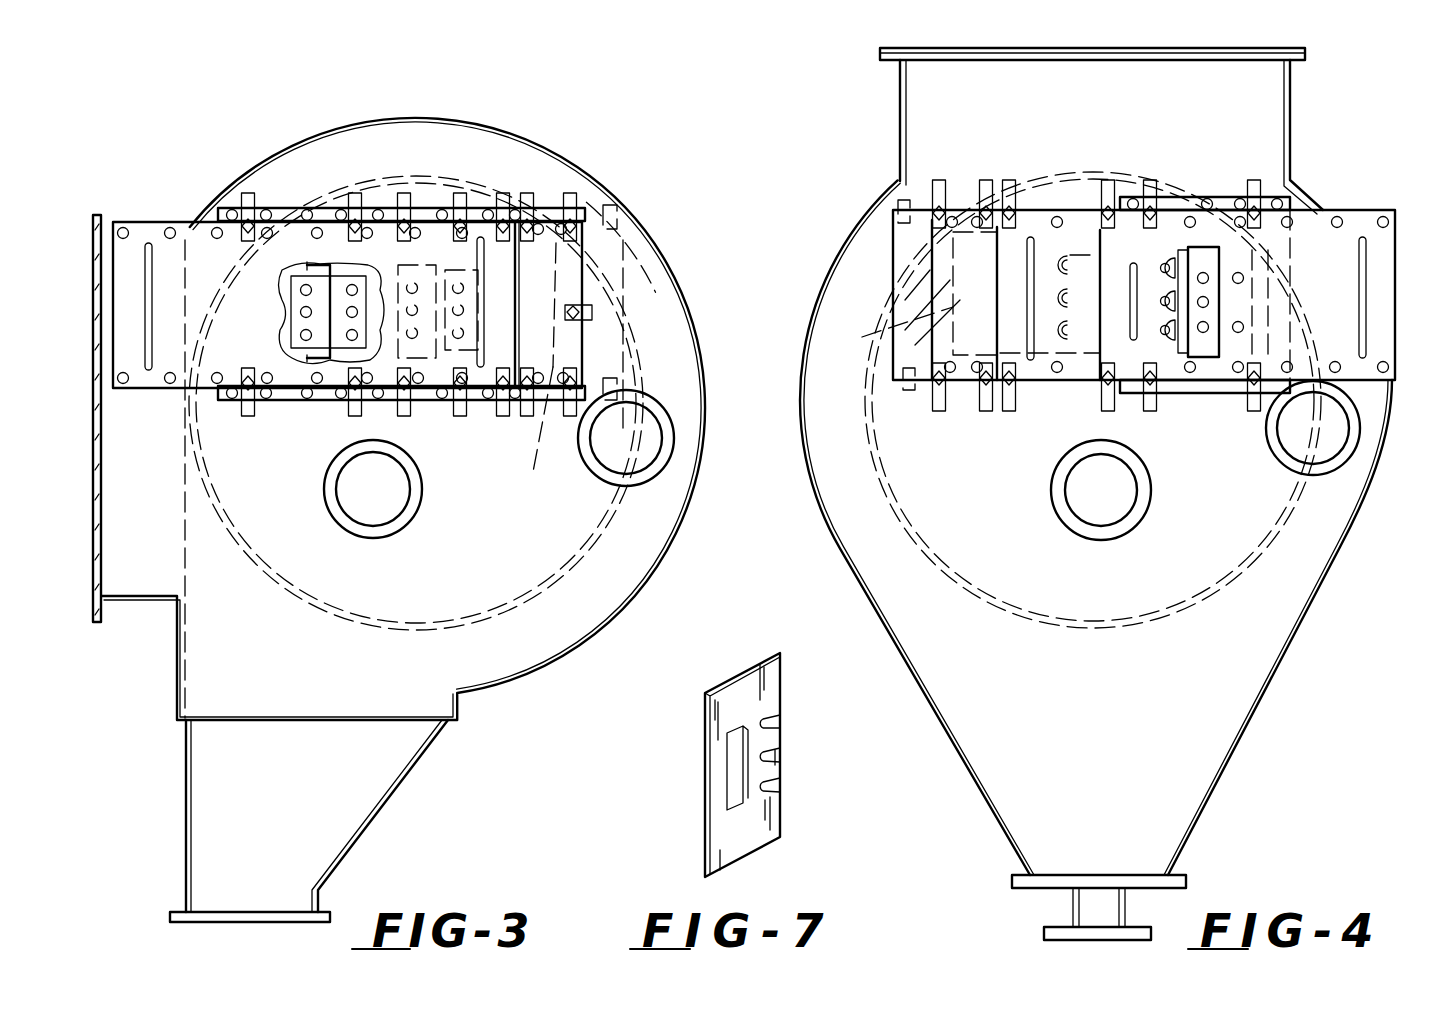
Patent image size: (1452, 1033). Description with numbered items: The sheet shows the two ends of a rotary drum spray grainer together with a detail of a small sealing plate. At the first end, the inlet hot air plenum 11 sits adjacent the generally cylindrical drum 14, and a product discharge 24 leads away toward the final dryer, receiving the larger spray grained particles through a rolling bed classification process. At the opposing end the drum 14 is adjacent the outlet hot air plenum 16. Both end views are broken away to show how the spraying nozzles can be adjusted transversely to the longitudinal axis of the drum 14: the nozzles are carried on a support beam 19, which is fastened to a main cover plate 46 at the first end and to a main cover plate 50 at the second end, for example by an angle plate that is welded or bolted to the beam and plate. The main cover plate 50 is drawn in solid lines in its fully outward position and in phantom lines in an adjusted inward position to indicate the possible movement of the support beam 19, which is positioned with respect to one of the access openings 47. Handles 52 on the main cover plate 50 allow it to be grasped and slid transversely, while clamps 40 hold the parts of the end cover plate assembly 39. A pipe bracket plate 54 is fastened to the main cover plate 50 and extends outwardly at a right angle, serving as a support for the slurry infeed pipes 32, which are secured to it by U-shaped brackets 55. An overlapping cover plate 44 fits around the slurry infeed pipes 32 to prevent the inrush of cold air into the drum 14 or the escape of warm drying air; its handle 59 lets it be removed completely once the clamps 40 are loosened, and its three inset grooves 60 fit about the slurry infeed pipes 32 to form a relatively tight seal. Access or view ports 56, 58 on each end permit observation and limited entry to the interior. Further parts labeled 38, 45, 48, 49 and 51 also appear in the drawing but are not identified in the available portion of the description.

In FIG. 3, the inlet hot air plenum 11 is at (84, 215).
In FIG. 3, the drum 14 is at (572, 578).
In FIG. 4, the drum 14 is at (1212, 604).
In FIG. 4, the outlet hot air plenum 16 is at (1296, 51).
In FIG. 3, the support beam 19 is at (313, 268).
In FIG. 3, the product discharge 24 is at (186, 850).
In FIG. 4, the slurry infeed pipes 32 is at (1168, 258).
In FIG. 3, the slide plate 38 is at (483, 213).
In FIG. 4, the end cover plate assembly 39 is at (1222, 197).
In FIG. 3, the clamps 40 is at (530, 212).
In FIG. 4, the clamps 40 is at (982, 207).
In FIG. 7, the overlapping cover plate 44 is at (732, 676).
In FIG. 4, the overlapping cover plate 44 is at (958, 210).
In FIG. 3, the guide plate 45 is at (552, 213).
In FIG. 3, the main cover plate 46 is at (148, 222).
In FIG. 3, the access openings 47 is at (535, 439).
In FIG. 4, the access openings 47 is at (890, 331).
In FIG. 3, the slot 48 is at (152, 250).
In FIG. 3, the bracket 49 is at (292, 272).
In FIG. 4, the main cover plate 50 is at (893, 266).
In FIG. 4, the housing shoulder 51 is at (953, 210).
In FIG. 4, the handles 52 is at (920, 248).
In FIG. 4, the pipe bracket plate 54 is at (1183, 250).
In FIG. 4, the U-shaped brackets 55 is at (1142, 258).
In FIG. 3, the access or view port 56 is at (365, 518).
In FIG. 4, the access or view port 56 is at (1125, 518).
In FIG. 3, the access or view port 58 is at (663, 440).
In FIG. 4, the access or view port 58 is at (1329, 475).
In FIG. 7, the handle 59 is at (740, 783).
In FIG. 4, the handle 59 is at (990, 393).
In FIG. 7, the inset grooves 60 is at (762, 784).